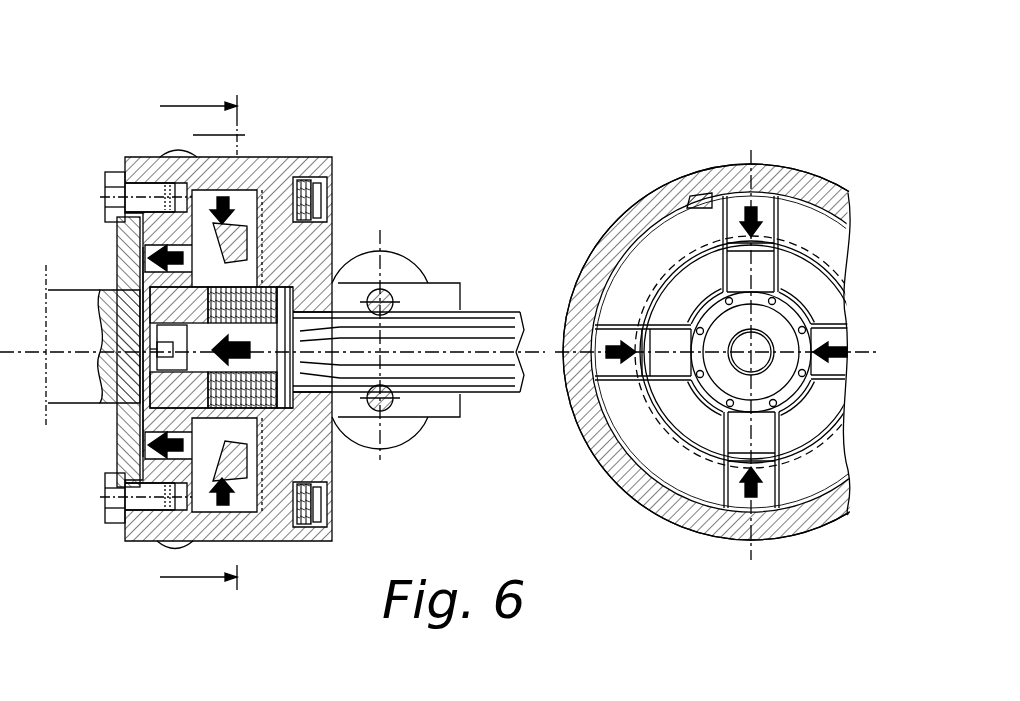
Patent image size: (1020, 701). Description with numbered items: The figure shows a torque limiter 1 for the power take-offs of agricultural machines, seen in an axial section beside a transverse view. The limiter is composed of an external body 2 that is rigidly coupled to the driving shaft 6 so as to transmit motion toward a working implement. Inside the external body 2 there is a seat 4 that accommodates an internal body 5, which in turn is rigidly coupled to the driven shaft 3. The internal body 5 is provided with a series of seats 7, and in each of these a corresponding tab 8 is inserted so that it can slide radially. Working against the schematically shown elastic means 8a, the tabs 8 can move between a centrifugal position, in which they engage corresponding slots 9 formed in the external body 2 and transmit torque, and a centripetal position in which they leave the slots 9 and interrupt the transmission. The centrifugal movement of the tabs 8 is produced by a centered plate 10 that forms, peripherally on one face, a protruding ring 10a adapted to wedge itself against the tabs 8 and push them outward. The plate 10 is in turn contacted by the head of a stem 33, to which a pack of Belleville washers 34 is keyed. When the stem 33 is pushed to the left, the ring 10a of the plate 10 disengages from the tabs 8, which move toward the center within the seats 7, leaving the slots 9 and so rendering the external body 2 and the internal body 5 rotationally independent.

The torque limiter 1 is at (264, 116).
The external body 2 is at (167, 175).
The driven shaft 3 is at (452, 365).
The seat 4 is at (600, 270).
The internal body 5 is at (307, 443).
The driving shaft 6 is at (75, 293).
The seats 7 is at (783, 232).
The tabs 8 is at (243, 220).
The elastic means 8a is at (693, 350).
The slots 9 is at (712, 193).
The centered plate 10 is at (185, 297).
The protruding ring 10a is at (197, 440).
The stem 33 is at (203, 353).
The pack of Belleville washers 34 is at (260, 300).